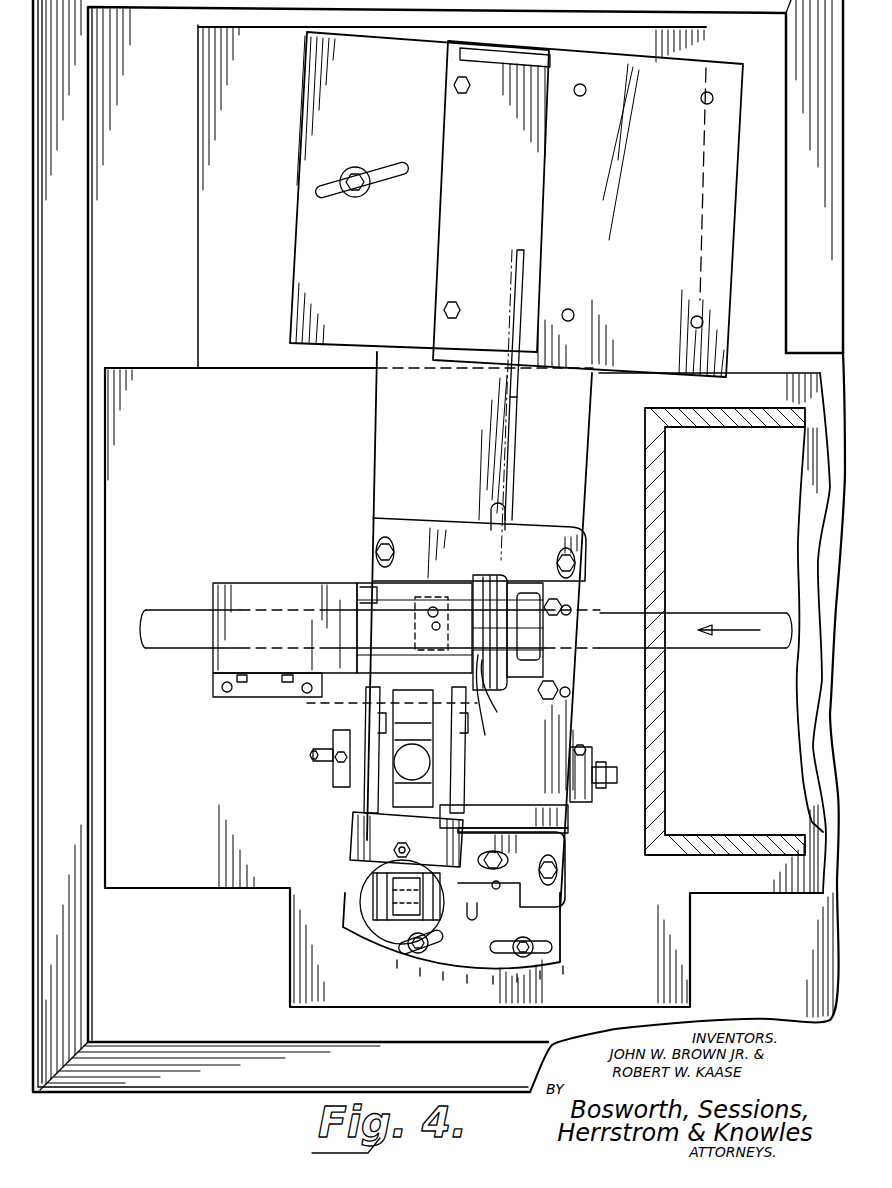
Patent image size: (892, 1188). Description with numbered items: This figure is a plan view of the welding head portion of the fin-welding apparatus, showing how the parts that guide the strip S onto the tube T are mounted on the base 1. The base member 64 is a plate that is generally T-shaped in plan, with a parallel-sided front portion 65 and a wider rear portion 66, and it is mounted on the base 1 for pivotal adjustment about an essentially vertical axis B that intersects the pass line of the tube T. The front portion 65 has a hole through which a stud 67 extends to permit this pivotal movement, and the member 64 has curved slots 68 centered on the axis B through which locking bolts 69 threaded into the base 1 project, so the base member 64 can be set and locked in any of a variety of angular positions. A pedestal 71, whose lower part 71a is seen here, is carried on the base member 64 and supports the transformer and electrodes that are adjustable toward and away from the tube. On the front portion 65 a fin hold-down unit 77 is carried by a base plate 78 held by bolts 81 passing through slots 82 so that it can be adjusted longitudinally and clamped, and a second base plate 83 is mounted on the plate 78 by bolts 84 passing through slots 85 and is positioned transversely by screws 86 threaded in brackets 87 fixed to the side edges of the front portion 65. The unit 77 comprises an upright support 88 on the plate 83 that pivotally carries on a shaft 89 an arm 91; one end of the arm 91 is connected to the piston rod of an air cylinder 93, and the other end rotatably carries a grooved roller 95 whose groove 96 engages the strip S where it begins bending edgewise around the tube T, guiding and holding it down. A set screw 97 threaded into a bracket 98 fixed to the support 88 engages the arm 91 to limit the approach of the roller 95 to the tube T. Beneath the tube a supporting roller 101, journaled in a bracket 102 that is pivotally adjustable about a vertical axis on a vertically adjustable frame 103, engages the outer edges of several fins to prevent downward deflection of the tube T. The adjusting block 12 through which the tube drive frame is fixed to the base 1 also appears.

The base 1 is at (780, 904).
The adjusting block 12 is at (683, 840).
The base member 64 is at (577, 922).
The front portion 65 is at (372, 449).
The rear portion 66 is at (303, 253).
The stud 67 is at (560, 640).
The curved slots 68 is at (390, 186).
The locking bolts 69 is at (357, 174).
The pedestal 71 is at (742, 275).
The lower part 71a is at (640, 210).
The fin hold-down unit 77 is at (335, 821).
The base plate 78 is at (421, 533).
The bolts 81 is at (377, 550).
The slots 82 is at (382, 530).
The base plate 83 is at (592, 758).
The bolts 84 is at (557, 604).
The slots 85 is at (571, 609).
The screws 86 is at (315, 755).
The brackets 87 is at (333, 775).
The upright support 88 is at (366, 737).
The shaft 89 is at (367, 698).
The arm 91 is at (430, 772).
The air cylinder 93 is at (367, 907).
The grooved roller 95 is at (497, 712).
The groove 96 is at (493, 707).
The set screw 97 is at (407, 847).
The bracket 98 is at (367, 850).
The supporting roller 101 is at (467, 578).
The bracket 102 is at (525, 580).
The frame 103 is at (213, 661).
The strip S is at (507, 488).
The tube T is at (713, 612).
The axis B is at (490, 655).